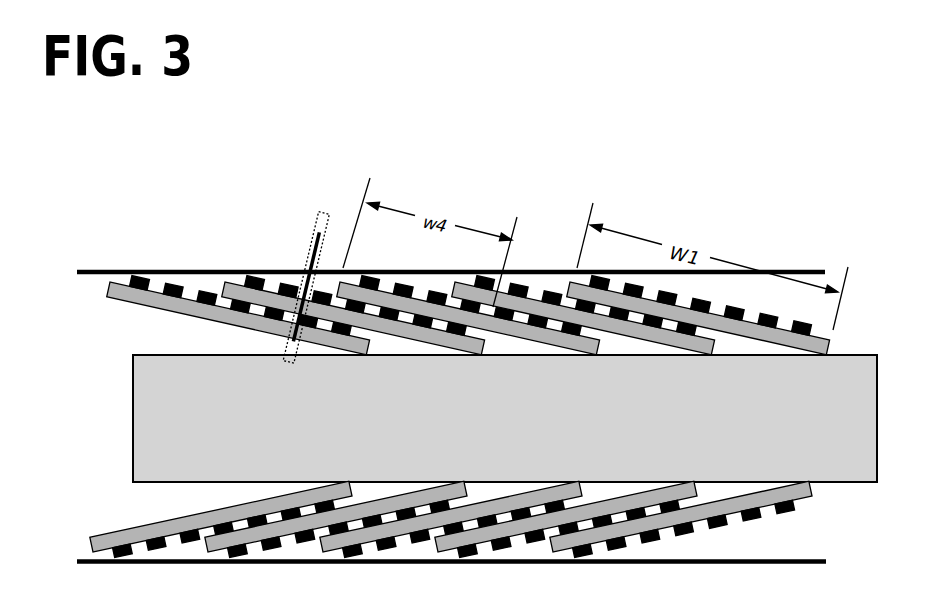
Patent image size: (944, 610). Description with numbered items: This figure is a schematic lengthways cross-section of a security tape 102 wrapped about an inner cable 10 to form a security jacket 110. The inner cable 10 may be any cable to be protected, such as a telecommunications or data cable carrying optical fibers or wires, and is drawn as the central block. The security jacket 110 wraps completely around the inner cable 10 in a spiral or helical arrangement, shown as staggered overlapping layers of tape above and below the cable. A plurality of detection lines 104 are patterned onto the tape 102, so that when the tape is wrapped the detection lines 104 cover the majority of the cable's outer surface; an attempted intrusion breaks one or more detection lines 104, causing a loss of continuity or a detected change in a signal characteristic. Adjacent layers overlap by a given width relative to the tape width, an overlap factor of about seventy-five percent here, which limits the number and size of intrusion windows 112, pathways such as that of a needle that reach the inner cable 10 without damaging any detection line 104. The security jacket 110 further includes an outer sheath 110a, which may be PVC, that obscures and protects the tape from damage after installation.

The inner cable 10 is at (132, 422).
The security tape 102 is at (210, 271).
The detection lines 104 is at (177, 285).
The security jacket 110 is at (432, 367).
The outer sheath 110a is at (285, 270).
The intrusion window 112 is at (315, 223).